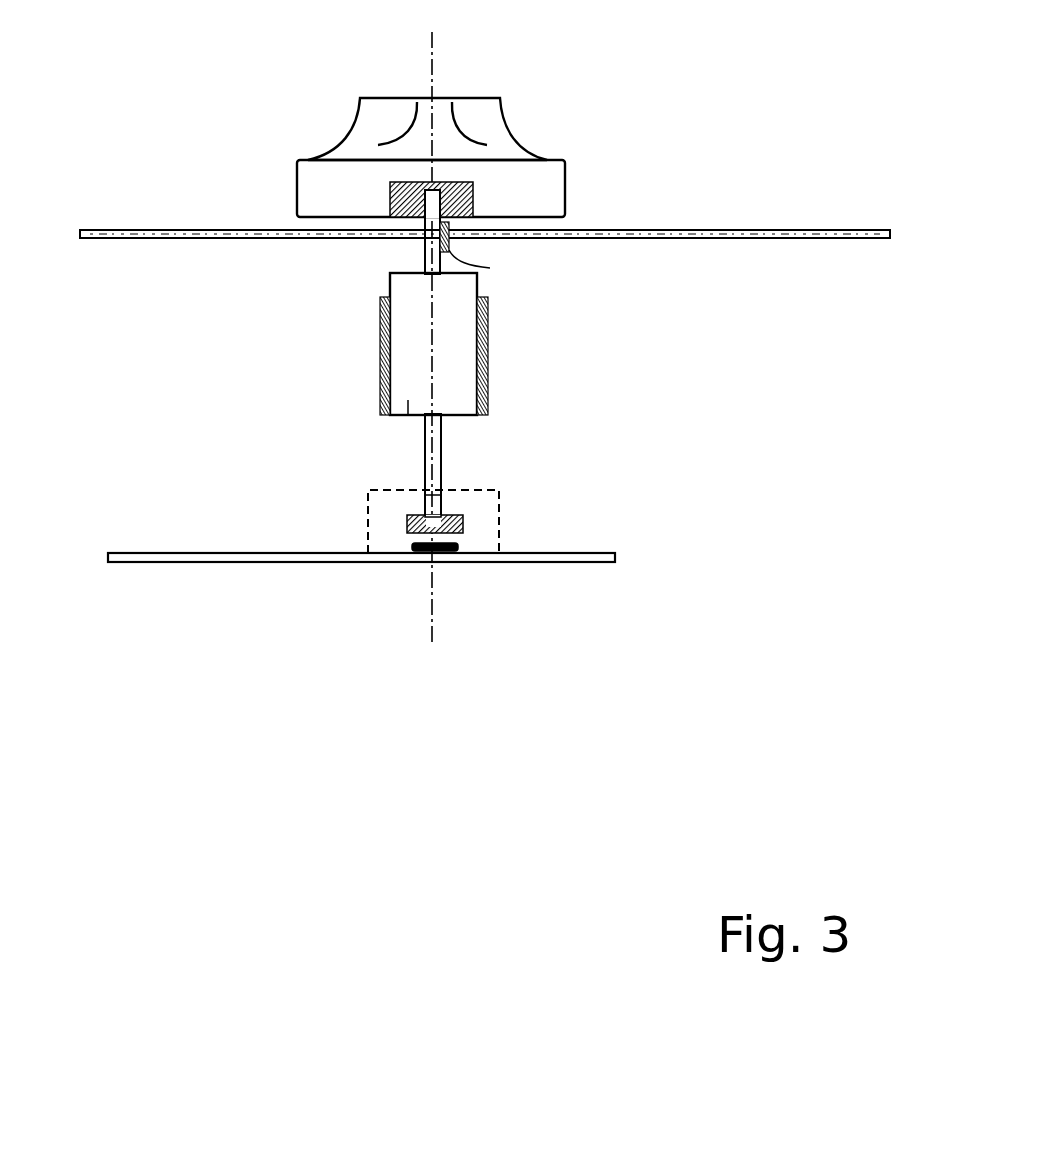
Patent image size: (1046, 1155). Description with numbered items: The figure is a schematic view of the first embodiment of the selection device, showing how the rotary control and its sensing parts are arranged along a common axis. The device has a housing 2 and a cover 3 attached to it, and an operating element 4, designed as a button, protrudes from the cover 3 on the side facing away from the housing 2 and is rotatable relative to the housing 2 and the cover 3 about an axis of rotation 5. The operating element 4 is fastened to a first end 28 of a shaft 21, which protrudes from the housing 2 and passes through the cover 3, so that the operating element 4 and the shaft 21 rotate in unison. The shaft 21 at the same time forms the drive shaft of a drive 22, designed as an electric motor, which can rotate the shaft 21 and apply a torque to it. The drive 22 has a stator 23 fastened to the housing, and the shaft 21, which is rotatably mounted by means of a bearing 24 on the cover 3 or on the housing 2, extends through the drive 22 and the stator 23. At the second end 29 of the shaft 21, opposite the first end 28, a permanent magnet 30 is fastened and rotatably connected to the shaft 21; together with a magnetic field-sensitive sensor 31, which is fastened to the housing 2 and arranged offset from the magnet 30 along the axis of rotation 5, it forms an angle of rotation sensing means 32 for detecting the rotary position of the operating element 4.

The housing 2 is at (175, 557).
The cover 3 is at (762, 229).
The operating element 4 is at (498, 137).
The axis of rotation 5 is at (432, 67).
The shaft 21 is at (426, 252).
The drive 22 is at (408, 400).
The stator 23 is at (489, 362).
The bearing 24 is at (449, 250).
The first end 28 is at (424, 212).
The second end 29 is at (427, 515).
The permanent magnet 30 is at (407, 522).
The magnetic field-sensitive sensor 31 is at (459, 549).
The angle of rotation sensing means 32 is at (499, 507).